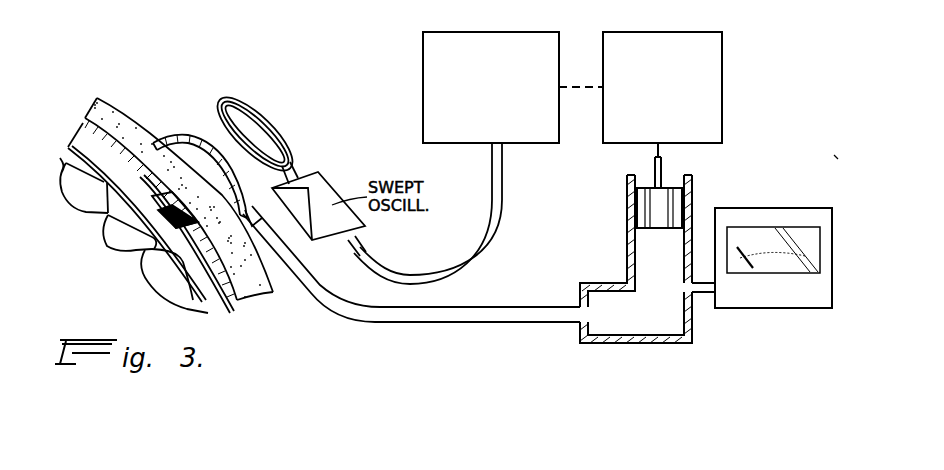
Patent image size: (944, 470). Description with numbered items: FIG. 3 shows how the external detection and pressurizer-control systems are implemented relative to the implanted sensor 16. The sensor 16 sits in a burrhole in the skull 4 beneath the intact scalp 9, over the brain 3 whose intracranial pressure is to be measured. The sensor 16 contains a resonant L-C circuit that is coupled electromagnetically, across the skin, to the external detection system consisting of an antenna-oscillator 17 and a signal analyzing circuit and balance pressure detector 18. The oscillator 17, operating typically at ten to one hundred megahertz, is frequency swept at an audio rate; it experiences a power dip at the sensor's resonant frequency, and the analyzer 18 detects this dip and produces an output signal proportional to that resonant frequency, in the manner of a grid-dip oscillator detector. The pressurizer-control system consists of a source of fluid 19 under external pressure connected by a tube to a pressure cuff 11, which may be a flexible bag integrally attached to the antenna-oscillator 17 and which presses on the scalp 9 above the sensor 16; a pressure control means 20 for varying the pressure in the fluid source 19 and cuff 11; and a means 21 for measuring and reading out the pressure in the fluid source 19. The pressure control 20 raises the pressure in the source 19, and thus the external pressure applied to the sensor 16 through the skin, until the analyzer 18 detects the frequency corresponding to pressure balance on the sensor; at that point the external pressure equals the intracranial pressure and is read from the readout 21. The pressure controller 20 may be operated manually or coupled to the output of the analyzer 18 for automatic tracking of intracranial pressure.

The brain 3 is at (75, 187).
The skull 4 is at (92, 141).
The scalp 9 is at (98, 98).
The pressure cuff 11 is at (177, 135).
The implanted sensor 16 is at (173, 210).
The antenna-oscillator 17 is at (254, 116).
The signal analyzing circuit and balance pressure detector 18 is at (446, 43).
The source of fluid 19 is at (692, 325).
The pressure control means 20 is at (643, 35).
The pressure measuring and readout means 21 is at (771, 293).